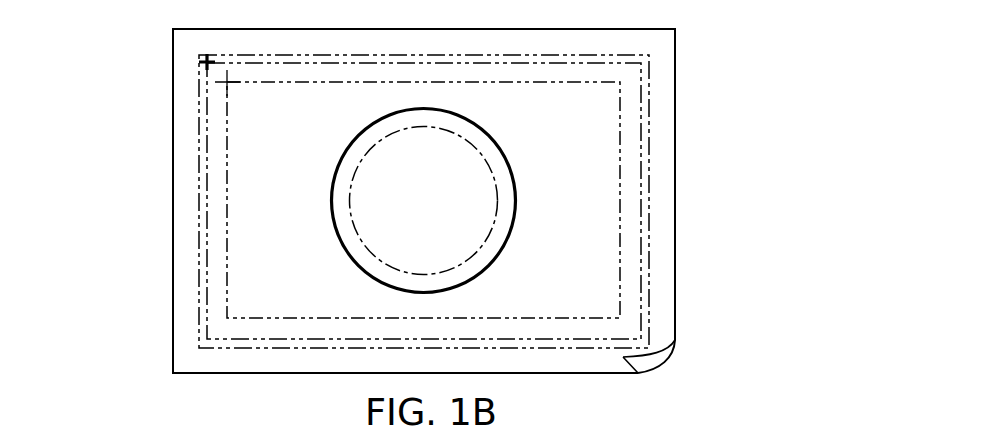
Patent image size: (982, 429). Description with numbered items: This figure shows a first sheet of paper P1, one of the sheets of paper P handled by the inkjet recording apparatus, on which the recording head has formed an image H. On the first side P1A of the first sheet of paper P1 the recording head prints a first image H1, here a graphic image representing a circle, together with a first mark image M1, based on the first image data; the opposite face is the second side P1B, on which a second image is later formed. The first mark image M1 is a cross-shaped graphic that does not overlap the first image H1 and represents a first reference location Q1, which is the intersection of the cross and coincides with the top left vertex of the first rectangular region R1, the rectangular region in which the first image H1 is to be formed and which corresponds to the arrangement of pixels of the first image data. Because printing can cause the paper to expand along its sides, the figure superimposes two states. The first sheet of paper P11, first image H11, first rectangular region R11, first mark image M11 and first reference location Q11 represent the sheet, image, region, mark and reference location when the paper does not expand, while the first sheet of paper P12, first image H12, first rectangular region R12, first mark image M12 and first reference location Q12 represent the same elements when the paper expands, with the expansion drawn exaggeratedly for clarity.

The sheet of paper P is at (499, 200).
The first sheet of paper P1 is at (718, 52).
The first sheet of paper when expanded P12 is at (675, 205).
The first sheet of paper when not expanded P11 is at (649, 160).
The first side of the first sheet of paper P1A is at (665, 280).
The second side of the first sheet of paper P1B is at (656, 362).
The first rectangular region R1 is at (497, 201).
The first rectangular region when the sheet expands R12 is at (642, 108).
The first rectangular region when the sheet does not expand R11 is at (620, 137).
The first mark image M1 is at (141, 65).
The first mark image when the sheet expands M12 is at (204, 61).
The first mark image when the sheet does not expand M11 is at (232, 85).
The first reference location Q1 is at (136, 86).
The first reference location when the sheet expands Q12 is at (205, 65).
The first reference location when the sheet does not expand Q11 is at (229, 86).
The first image H1 is at (476, 188).
The first image when the sheet does not expand H11 is at (463, 137).
The first image when the sheet expands H12 is at (504, 149).
The image H is at (530, 195).